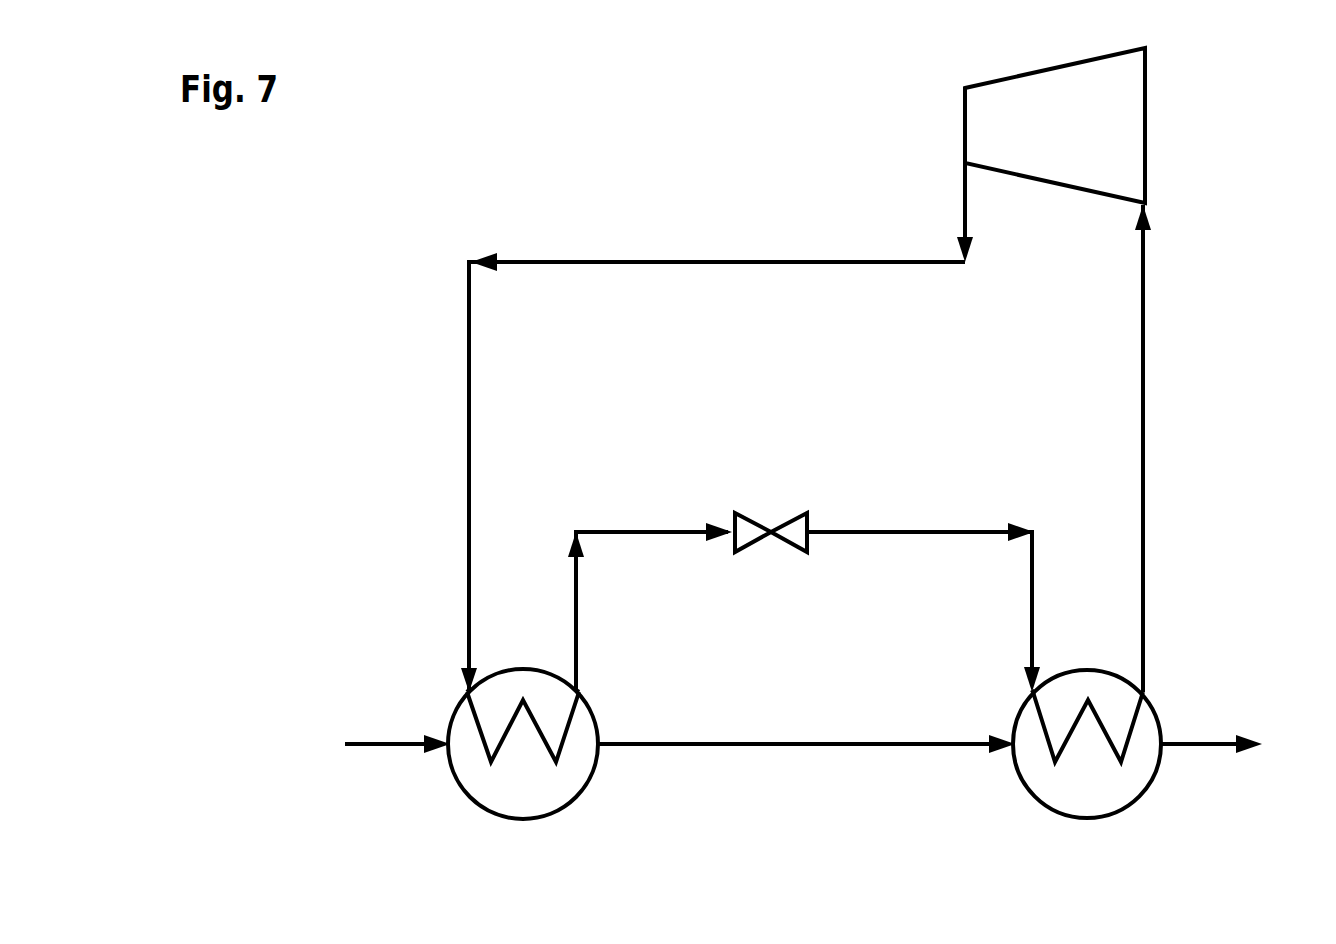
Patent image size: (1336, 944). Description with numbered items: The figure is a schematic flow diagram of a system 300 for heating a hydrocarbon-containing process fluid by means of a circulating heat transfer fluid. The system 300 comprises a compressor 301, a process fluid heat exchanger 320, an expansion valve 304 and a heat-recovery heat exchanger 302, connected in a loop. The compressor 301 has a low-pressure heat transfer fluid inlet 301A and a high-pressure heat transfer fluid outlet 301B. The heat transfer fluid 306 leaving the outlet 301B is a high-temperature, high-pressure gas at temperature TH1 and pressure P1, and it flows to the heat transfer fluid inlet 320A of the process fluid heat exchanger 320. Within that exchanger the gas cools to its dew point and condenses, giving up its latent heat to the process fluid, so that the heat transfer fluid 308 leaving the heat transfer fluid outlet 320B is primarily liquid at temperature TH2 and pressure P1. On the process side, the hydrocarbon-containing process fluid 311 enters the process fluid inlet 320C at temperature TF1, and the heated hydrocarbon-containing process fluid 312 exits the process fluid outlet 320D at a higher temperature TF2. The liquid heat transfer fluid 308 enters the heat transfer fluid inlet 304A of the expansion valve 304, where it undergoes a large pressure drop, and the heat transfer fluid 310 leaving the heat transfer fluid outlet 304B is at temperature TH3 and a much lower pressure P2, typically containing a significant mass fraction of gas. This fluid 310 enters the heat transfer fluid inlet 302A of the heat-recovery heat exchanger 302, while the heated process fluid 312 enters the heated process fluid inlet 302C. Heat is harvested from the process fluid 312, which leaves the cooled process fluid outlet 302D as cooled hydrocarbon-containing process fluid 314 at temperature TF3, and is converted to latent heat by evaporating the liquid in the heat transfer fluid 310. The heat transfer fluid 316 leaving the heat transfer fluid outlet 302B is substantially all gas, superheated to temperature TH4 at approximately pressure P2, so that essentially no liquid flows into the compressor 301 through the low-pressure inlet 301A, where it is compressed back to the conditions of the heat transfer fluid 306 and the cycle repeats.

The system 300 is at (518, 145).
The compressor 301 is at (1075, 137).
The low-pressure heat transfer fluid inlet 301A is at (1147, 200).
The high-pressure heat transfer fluid outlet 301B is at (962, 163).
The heat-recovery heat exchanger 302 is at (1102, 799).
The heat transfer fluid inlet 302A is at (1032, 692).
The heat transfer fluid outlet 302B is at (1143, 692).
The heated process fluid inlet 302C is at (1016, 737).
The cooled process fluid outlet 302D is at (1160, 740).
The expansion valve 304 is at (795, 523).
The heat transfer fluid inlet 304A is at (724, 538).
The heat transfer fluid outlet 304B is at (809, 540).
The heat transfer fluid 306 is at (700, 260).
The heat transfer fluid 308 is at (648, 531).
The heat transfer fluid 310 is at (890, 531).
The hydrocarbon-containing process fluid 311 is at (373, 748).
The heated hydrocarbon-containing process fluid 312 is at (628, 748).
The cooled hydrocarbon-containing process fluid 314 is at (1212, 748).
The heat transfer fluid 316 is at (1143, 452).
The process fluid heat exchanger 320 is at (539, 799).
The heat transfer fluid inlet 320A is at (467, 692).
The heat transfer fluid outlet 320B is at (578, 690).
The process fluid inlet 320C is at (454, 757).
The process fluid outlet 320D is at (597, 740).